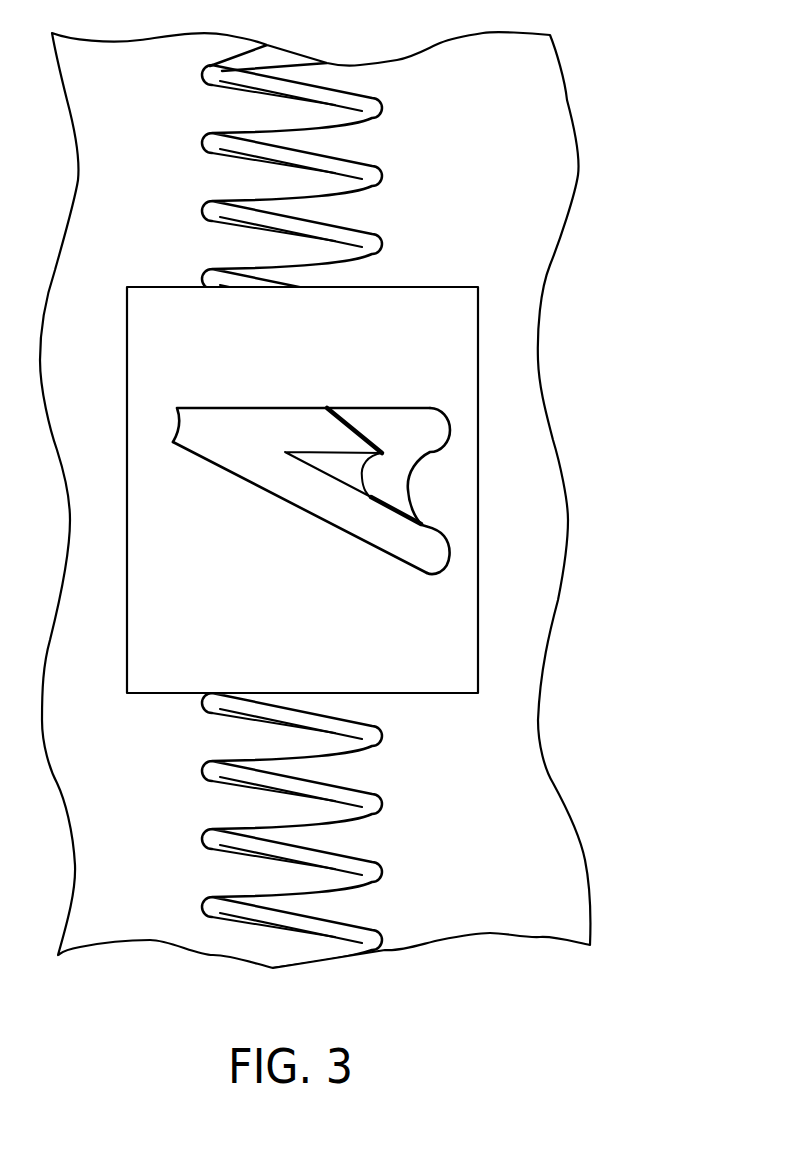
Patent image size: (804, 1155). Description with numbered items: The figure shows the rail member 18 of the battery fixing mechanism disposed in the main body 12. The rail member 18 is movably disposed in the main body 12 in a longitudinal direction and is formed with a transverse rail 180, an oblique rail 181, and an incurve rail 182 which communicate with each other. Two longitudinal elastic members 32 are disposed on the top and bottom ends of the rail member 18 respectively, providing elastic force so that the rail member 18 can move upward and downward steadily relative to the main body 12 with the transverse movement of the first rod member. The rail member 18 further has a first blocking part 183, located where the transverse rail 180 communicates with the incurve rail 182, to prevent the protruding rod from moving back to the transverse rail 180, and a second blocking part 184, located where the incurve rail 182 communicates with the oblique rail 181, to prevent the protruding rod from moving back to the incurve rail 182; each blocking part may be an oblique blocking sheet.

The main body 12 is at (153, 902).
The longitudinal elastic member 32 is at (360, 108).
The rail member 18 is at (371, 497).
The transverse rail 180 is at (203, 407).
The oblique rail 181 is at (325, 502).
The incurve rail 182 is at (414, 475).
The first blocking part 183 is at (355, 430).
The second blocking part 184 is at (398, 513).